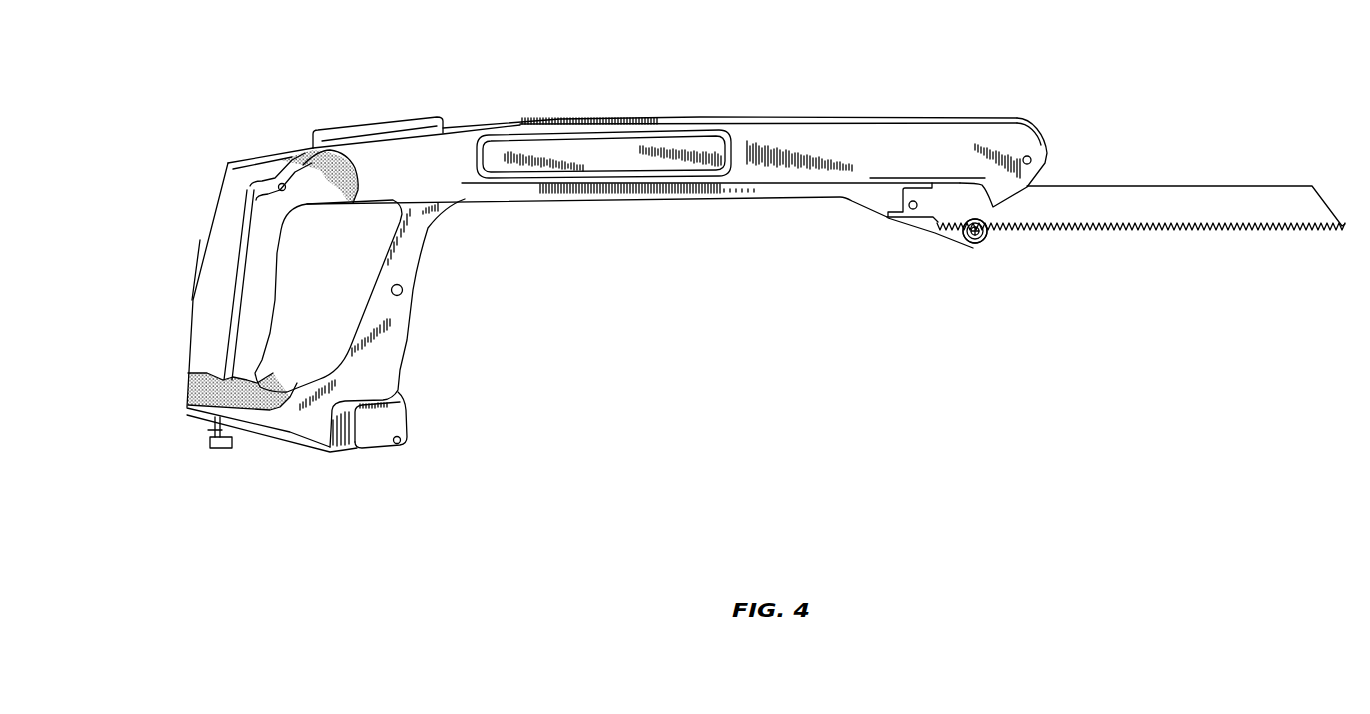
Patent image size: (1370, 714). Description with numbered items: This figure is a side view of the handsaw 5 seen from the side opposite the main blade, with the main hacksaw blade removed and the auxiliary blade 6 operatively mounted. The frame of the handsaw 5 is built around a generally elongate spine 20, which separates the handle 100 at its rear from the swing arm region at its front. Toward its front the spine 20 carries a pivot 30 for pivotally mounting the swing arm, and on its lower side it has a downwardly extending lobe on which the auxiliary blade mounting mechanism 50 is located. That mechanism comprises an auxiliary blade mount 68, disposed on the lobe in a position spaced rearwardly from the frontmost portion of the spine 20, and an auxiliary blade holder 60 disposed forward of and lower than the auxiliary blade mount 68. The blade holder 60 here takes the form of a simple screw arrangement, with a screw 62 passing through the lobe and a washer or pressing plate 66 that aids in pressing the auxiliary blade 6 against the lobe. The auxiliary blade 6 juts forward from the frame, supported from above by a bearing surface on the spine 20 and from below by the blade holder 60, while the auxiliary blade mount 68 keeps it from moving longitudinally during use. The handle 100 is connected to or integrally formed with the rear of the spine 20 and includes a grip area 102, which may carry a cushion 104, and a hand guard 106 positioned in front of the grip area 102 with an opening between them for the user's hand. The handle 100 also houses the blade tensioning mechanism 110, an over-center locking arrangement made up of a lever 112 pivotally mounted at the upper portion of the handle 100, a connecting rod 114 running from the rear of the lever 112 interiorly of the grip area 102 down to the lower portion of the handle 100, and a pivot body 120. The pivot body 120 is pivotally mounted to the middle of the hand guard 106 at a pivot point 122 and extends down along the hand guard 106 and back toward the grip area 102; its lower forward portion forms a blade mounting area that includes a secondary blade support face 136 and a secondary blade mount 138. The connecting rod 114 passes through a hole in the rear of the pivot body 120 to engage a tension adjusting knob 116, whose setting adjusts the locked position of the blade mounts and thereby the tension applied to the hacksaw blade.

The handsaw 5 is at (453, 73).
The auxiliary blade 6 is at (1167, 207).
The spine 20 is at (807, 142).
The pivot 30 is at (1031, 158).
The auxiliary blade mounting mechanism 50 is at (877, 245).
The auxiliary blade holder 60 is at (984, 240).
The screw 62 is at (975, 231).
The washer or pressing plate 66 is at (973, 248).
The auxiliary blade mount 68 is at (915, 201).
The handle 100 is at (248, 138).
The grip area 102 is at (217, 250).
The cushion 104 is at (210, 293).
The hand guard 106 is at (403, 267).
The blade tensioning mechanism 110 is at (217, 470).
The lever 112 is at (380, 127).
The connecting rod 114 is at (208, 432).
The tension adjusting knob 116 is at (210, 440).
The pivot body 120 is at (327, 452).
The pivot point 122 is at (402, 292).
The secondary blade support face 136 is at (378, 432).
The secondary blade mount 138 is at (397, 444).